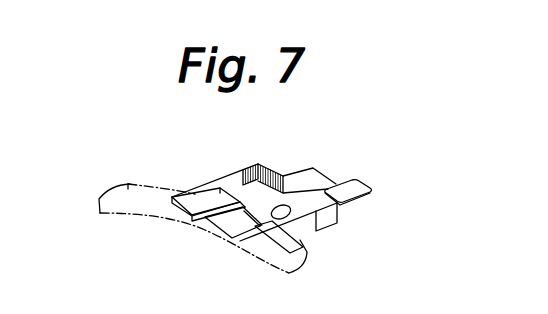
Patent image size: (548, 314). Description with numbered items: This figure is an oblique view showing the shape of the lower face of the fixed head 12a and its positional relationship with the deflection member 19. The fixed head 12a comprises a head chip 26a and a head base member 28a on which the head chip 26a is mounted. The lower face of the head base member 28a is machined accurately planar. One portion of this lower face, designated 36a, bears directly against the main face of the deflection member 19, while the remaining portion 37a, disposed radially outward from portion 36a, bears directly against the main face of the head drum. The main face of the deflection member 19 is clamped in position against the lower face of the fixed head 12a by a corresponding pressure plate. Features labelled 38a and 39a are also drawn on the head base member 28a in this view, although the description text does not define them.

The fixed head 12a is at (228, 172).
The deflection member 19 is at (120, 222).
The head chip 26a is at (355, 196).
The head base member 28a is at (315, 228).
The portion of lower face 36a is at (229, 226).
The remaining portion of lower face 37a is at (300, 200).
The tab 38a is at (191, 210).
The tab 39a is at (266, 236).